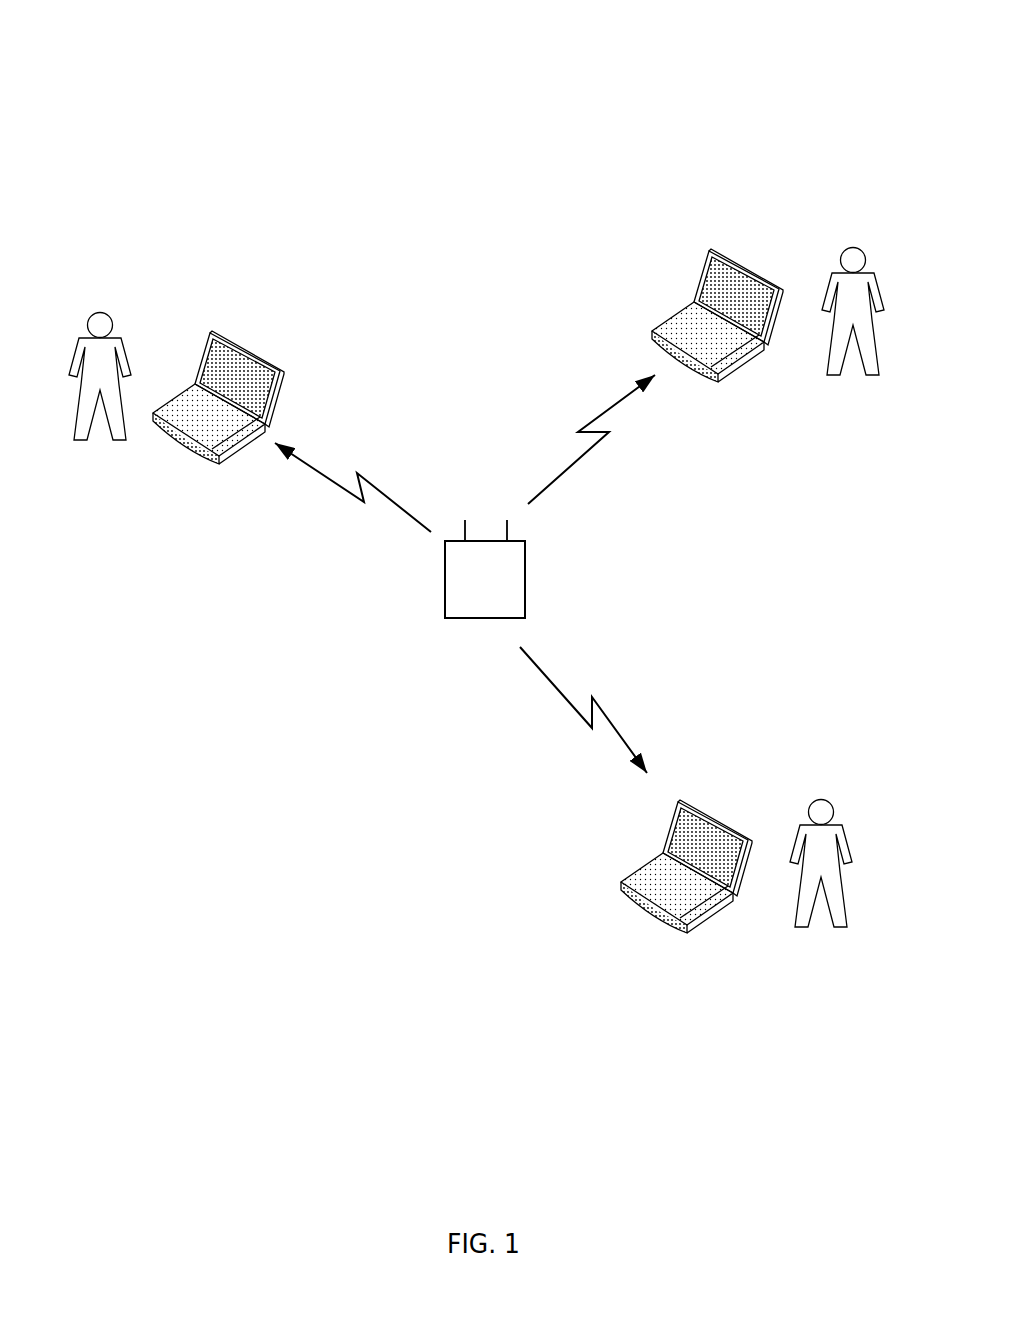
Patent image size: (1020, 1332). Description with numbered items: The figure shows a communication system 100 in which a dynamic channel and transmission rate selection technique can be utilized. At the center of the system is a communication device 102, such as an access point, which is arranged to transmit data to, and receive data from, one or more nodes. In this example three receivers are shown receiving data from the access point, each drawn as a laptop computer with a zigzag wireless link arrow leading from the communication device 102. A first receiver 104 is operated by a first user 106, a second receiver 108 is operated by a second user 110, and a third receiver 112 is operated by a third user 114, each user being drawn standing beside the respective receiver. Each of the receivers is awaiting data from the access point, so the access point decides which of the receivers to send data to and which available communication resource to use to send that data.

The communication system 100 is at (610, 88).
The communication device 102 is at (525, 570).
The first receiver 104 is at (728, 257).
The first user 106 is at (855, 247).
The second receiver 108 is at (695, 810).
The second user 110 is at (825, 800).
The third receiver 112 is at (245, 350).
The third user 114 is at (103, 312).